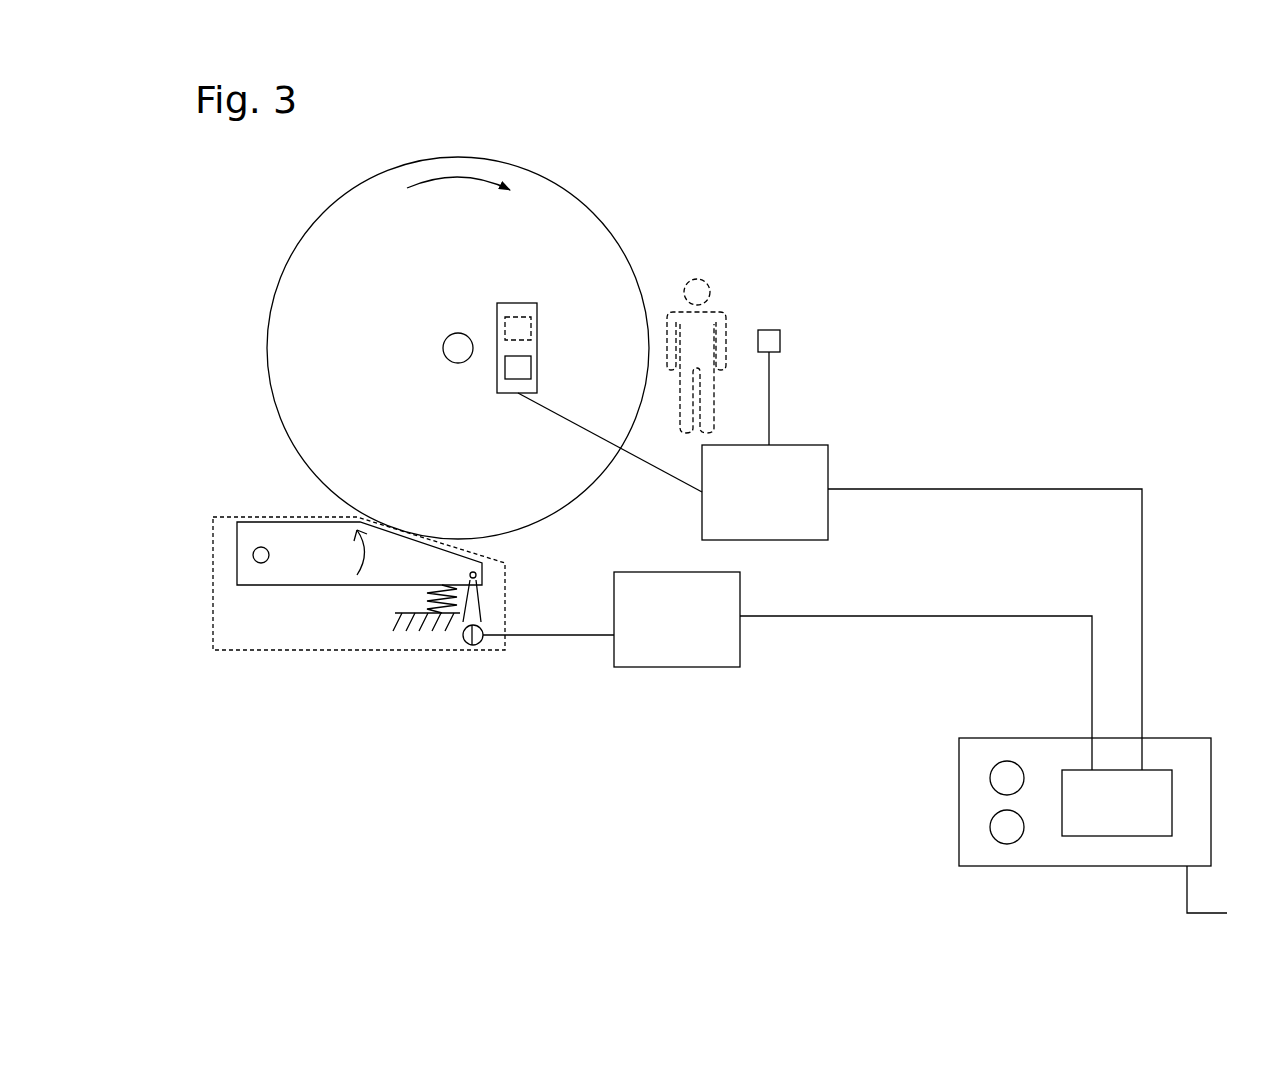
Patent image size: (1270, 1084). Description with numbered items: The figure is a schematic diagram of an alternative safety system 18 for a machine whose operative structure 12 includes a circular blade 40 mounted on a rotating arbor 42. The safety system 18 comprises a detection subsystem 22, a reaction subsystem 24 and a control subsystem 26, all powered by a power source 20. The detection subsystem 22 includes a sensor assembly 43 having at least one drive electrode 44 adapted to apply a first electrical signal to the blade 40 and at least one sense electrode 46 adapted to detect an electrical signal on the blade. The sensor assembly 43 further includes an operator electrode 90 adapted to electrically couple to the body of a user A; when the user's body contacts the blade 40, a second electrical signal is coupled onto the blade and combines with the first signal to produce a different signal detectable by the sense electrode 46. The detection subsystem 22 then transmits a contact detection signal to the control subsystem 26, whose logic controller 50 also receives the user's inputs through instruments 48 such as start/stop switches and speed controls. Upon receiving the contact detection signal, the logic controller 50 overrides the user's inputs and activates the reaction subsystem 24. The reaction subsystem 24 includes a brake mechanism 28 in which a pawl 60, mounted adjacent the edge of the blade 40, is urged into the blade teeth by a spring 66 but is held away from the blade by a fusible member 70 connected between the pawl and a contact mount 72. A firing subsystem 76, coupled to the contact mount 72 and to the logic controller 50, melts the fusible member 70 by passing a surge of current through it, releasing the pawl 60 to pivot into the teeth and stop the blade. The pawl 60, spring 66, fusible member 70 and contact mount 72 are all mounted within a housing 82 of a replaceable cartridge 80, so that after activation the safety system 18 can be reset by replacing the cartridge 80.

The operative structure 12 is at (607, 163).
The circular blade 40 is at (386, 248).
The arbor 42 is at (450, 353).
The sensor assembly 43 is at (530, 280).
The drive electrode 44 is at (530, 322).
The sense electrode 46 is at (525, 366).
The operator electrode 90 is at (780, 335).
The user A is at (716, 398).
The detection subsystem 22 is at (815, 488).
The safety system 18 is at (1152, 657).
The pawl 60 is at (282, 532).
The brake mechanism 28 is at (278, 603).
The spring 66 is at (412, 602).
The replaceable cartridge 80 is at (245, 675).
The fusible member 70 is at (480, 613).
The contact mount 72 is at (463, 643).
The housing 82 is at (293, 652).
The reaction subsystem 24 is at (702, 702).
The firing subsystem 76 is at (722, 610).
The control subsystem 26 is at (1170, 737).
The logic controller 50 is at (1156, 805).
The instruments 48 is at (1000, 828).
The power source 20 is at (1243, 900).